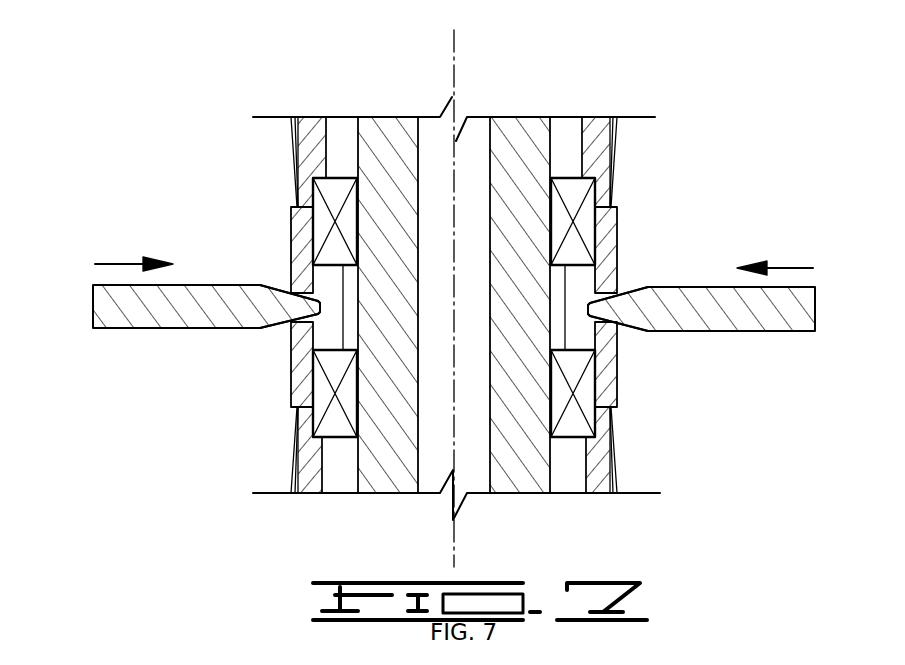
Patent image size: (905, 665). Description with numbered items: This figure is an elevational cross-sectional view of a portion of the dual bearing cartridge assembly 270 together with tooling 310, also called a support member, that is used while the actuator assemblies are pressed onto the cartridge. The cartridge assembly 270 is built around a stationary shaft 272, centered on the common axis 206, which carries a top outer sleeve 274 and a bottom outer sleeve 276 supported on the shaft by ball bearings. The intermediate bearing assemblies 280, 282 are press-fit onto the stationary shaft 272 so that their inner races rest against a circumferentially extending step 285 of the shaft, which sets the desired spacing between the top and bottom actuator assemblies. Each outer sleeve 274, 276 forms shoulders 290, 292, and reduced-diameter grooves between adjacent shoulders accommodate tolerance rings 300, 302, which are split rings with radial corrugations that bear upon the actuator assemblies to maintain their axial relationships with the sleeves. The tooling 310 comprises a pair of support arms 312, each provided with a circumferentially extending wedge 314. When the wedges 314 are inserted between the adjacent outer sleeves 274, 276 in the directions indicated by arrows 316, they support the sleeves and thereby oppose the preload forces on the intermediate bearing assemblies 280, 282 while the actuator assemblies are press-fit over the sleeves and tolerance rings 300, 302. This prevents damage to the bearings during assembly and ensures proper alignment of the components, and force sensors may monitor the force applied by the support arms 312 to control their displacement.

The dual bearing cartridge assembly 270 is at (343, 66).
The common axis 206 is at (480, 40).
The stationary shaft 272 is at (522, 128).
The top outer sleeve 274 is at (325, 140).
The bottom outer sleeve 276 is at (312, 490).
The intermediate bearing assembly 280 is at (318, 212).
The intermediate bearing assembly 282 is at (322, 398).
The step 285 is at (585, 325).
The shoulder 290 is at (607, 248).
The shoulder 292 is at (615, 372).
The tolerance ring 300 is at (292, 138).
The tolerance ring 302 is at (292, 468).
The tooling 310 is at (129, 206).
The support arm 312 is at (165, 330).
The wedge 314 is at (300, 302).
The arrow 316 is at (125, 262).